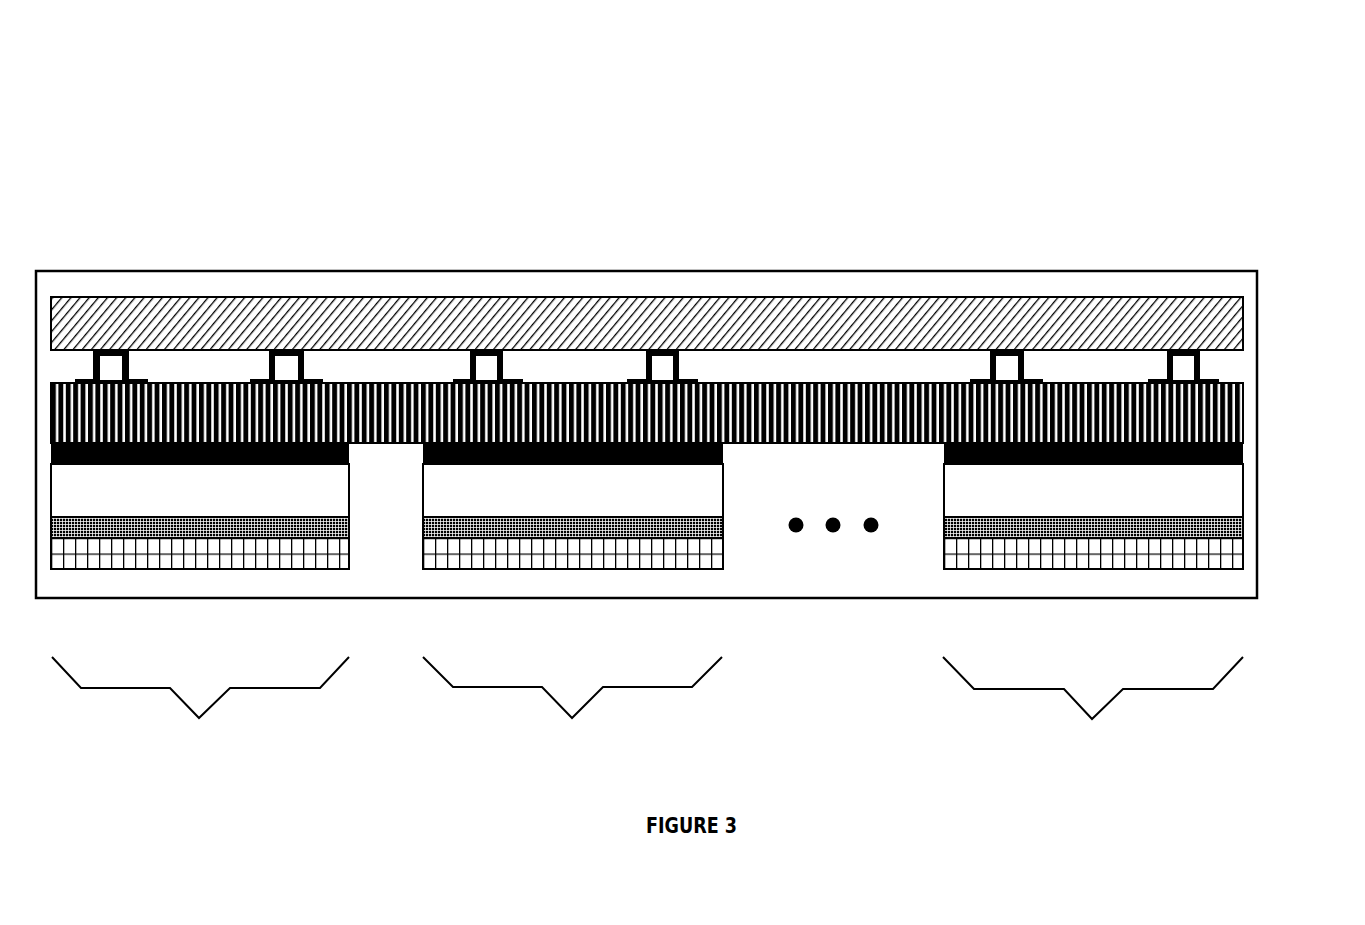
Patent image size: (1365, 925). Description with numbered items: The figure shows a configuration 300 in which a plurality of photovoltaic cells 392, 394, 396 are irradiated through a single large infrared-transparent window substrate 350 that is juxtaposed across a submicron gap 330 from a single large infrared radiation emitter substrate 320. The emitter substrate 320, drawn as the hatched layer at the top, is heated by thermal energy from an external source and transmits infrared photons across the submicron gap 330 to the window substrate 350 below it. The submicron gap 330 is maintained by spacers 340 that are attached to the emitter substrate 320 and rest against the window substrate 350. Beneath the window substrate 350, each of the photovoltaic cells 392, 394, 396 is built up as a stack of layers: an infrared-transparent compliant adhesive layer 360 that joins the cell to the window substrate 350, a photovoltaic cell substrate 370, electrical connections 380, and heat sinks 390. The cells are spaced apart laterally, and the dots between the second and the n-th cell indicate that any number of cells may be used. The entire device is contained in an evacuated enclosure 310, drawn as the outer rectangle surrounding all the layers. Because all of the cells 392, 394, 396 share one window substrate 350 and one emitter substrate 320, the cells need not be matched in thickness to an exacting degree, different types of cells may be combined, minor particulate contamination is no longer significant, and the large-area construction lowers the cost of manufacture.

The configuration 300 is at (108, 88).
The evacuated enclosure 310 is at (617, 258).
The single large infrared radiation emitter substrate 320 is at (1248, 306).
The submicron gap 330 is at (1248, 360).
The spacers 340 is at (1212, 374).
The single large infrared-transparent window substrate 350 is at (1248, 427).
The infrared-transparent compliant adhesive layer 360 is at (1248, 456).
The photovoltaic cell substrate 370 is at (1250, 493).
The electrical connections 380 is at (1250, 523).
The heat sinks 390 is at (1250, 553).
The photovoltaic cell 392 is at (200, 583).
The photovoltaic cell 394 is at (557, 583).
The photovoltaic cell 396 is at (1093, 583).